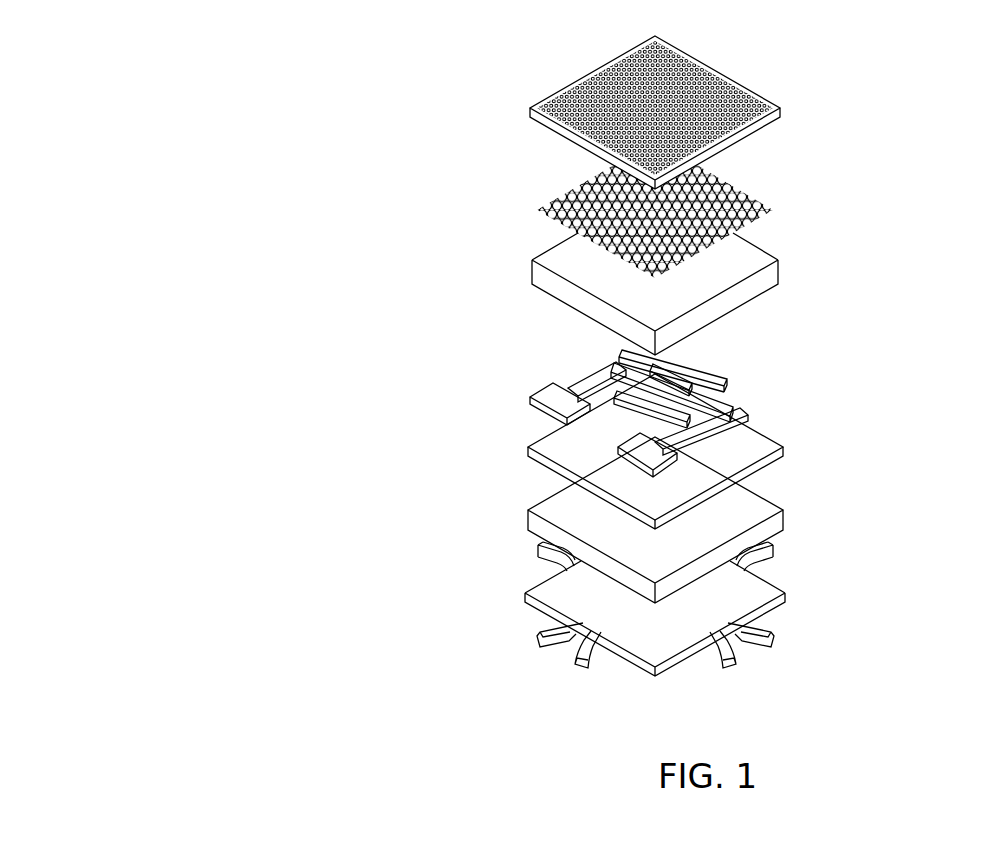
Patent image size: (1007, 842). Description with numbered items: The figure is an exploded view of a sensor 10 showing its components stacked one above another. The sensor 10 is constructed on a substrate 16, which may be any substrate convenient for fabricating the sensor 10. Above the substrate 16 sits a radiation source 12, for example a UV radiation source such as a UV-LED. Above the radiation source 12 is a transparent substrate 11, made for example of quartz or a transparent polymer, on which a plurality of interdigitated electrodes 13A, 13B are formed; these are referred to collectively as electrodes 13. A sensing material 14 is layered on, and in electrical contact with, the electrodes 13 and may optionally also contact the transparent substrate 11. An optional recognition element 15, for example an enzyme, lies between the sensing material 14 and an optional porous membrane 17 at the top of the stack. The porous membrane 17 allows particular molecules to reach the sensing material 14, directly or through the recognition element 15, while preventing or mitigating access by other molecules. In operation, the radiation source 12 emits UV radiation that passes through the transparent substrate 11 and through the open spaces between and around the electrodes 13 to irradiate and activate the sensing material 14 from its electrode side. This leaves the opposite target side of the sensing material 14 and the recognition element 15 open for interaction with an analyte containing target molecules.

The sensor 10 is at (307, 235).
The porous membrane 17 is at (780, 110).
The recognition element 15 is at (777, 207).
The sensing material 14 is at (780, 278).
The interdigitated electrode 13A is at (727, 376).
The electrodes 13 is at (767, 457).
The interdigitated electrode 13B is at (655, 447).
The transparent substrate 11 is at (783, 448).
The radiation source 12 is at (783, 515).
The substrate 16 is at (783, 595).